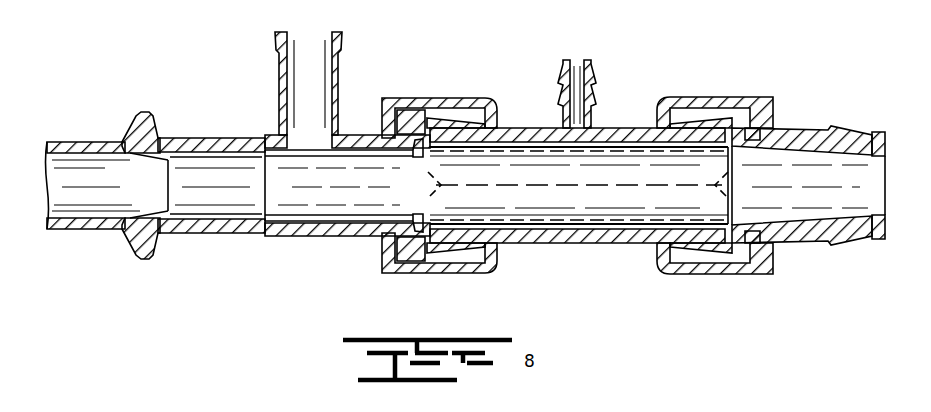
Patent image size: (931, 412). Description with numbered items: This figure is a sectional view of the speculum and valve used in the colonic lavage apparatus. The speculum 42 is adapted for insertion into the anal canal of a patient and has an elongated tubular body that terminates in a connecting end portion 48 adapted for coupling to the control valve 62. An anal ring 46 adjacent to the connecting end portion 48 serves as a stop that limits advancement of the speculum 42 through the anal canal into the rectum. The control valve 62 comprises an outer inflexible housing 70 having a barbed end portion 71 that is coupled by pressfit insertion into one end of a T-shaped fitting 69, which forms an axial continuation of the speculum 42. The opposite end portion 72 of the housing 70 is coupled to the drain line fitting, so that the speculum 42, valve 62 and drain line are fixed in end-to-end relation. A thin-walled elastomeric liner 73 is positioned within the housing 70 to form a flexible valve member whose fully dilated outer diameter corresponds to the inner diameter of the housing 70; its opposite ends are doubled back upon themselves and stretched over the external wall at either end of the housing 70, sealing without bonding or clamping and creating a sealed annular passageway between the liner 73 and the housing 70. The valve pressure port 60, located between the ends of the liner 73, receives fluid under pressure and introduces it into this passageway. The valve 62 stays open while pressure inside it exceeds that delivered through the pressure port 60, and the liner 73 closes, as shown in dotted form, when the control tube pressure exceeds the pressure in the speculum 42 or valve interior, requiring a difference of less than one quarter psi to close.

The speculum 42 is at (80, 142).
The anal ring 46 is at (146, 115).
The connecting end portion 48 is at (205, 138).
The valve pressure port 60 is at (560, 82).
The control valve 62 is at (513, 116).
The T-shaped fitting 69 is at (283, 238).
The housing 70 is at (535, 245).
The barbed end portion 71 is at (440, 262).
The opposite end portion 72 is at (688, 262).
The elastomeric liner 73 is at (600, 184).